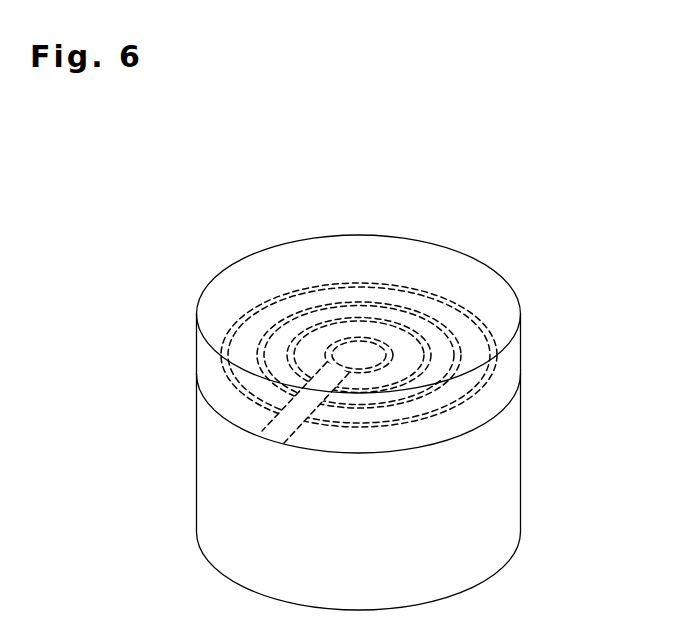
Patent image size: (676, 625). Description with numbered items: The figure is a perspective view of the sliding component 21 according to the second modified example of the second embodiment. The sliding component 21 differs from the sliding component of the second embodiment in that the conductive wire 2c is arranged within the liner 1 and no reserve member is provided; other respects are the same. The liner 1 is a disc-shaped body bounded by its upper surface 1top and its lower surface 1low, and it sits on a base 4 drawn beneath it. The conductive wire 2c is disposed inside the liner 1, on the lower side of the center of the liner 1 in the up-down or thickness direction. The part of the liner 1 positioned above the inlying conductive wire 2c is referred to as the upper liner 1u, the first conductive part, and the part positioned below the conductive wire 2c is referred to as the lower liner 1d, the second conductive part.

The sliding component 21 is at (153, 258).
The liner 1 is at (522, 343).
The upper liner 1u is at (180, 320).
The lower liner 1d is at (183, 373).
The upper surface 1top is at (433, 268).
The lower surface 1low is at (465, 432).
The conductive wire 2c is at (497, 405).
The base 4 is at (495, 513).